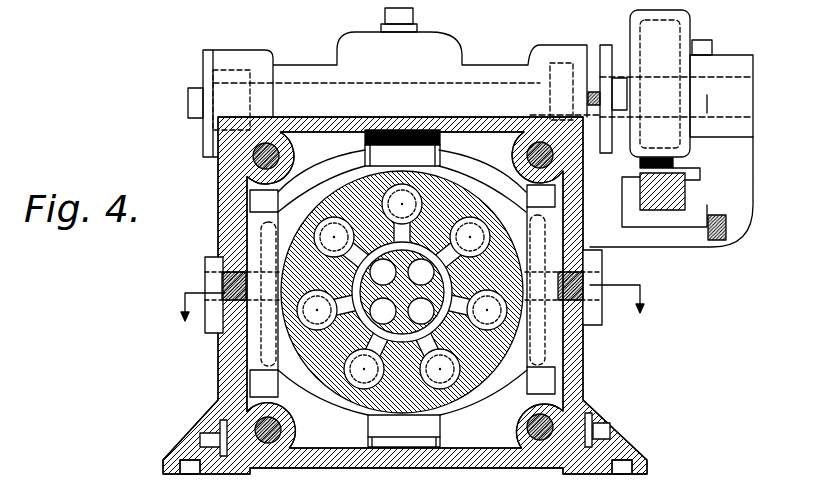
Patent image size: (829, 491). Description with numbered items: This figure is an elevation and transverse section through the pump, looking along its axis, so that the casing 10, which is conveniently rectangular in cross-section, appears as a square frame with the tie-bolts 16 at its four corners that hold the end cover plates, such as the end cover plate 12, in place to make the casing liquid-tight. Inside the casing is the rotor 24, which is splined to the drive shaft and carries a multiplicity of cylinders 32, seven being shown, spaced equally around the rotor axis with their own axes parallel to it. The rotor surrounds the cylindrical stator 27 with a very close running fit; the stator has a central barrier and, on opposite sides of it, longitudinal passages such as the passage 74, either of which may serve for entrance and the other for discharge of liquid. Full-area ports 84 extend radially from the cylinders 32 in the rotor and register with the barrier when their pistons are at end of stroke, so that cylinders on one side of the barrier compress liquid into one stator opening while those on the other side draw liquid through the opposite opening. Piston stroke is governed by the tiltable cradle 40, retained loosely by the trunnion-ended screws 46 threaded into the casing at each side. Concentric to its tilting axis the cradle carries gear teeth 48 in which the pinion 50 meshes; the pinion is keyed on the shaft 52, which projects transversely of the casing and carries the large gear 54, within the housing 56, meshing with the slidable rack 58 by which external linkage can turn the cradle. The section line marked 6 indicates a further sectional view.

The casing 10 is at (224, 231).
The tie-bolts 16 is at (538, 437).
The rotor 24 is at (365, 192).
The stator 27 is at (402, 337).
The cylinders 32 is at (472, 336).
The cradle 40 is at (463, 405).
The screws 46 is at (599, 267).
The gear teeth 48 is at (363, 142).
The pinion 50 is at (453, 46).
The shaft 52 is at (756, 78).
The large gear 54 is at (675, 161).
The housing 56 is at (689, 22).
The rack 58 is at (683, 172).
The longitudinal passage 74 is at (383, 291).
The end cover plate 12 is at (421, 291).
The cylinder ports 84 is at (378, 392).
The section line 6 is at (411, 313).